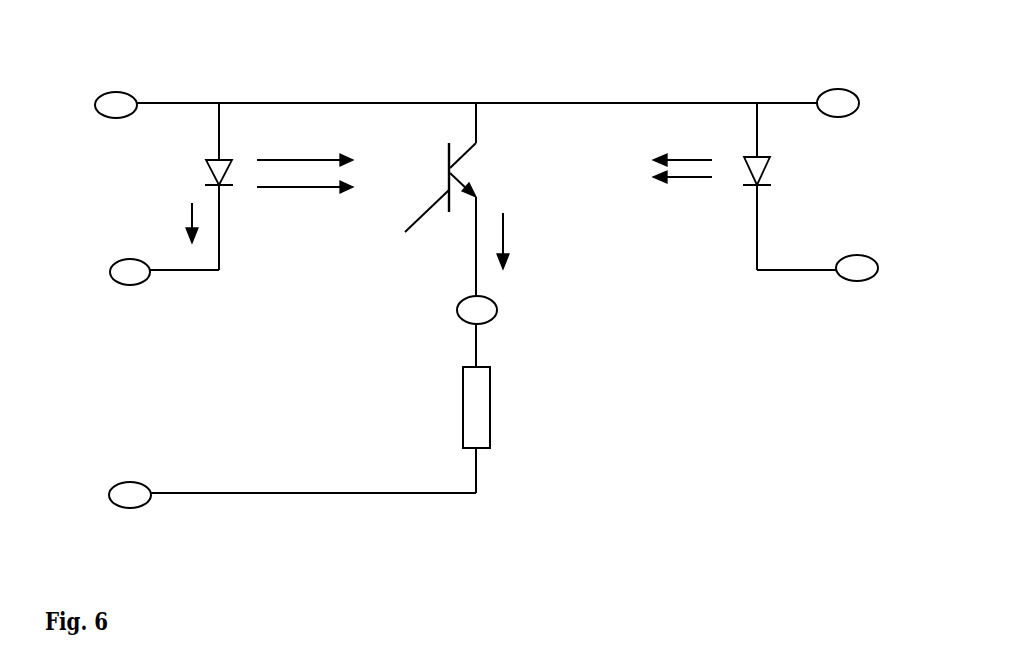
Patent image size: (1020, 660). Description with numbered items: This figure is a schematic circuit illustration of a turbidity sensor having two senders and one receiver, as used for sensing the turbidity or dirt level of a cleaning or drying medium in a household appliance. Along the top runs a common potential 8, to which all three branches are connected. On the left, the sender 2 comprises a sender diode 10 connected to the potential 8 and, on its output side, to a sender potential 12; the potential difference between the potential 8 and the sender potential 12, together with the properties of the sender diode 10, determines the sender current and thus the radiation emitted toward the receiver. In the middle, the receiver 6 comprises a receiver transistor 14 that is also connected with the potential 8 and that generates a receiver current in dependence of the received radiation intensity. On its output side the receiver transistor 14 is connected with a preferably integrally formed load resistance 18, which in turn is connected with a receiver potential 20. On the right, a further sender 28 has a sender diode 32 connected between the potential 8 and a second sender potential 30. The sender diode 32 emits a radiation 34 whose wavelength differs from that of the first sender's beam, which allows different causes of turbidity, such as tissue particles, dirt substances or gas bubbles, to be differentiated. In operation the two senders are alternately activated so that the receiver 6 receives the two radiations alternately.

The sender 2 is at (199, 225).
The receiver 6 is at (488, 199).
The potential 8 is at (119, 97).
The sender diode 10 is at (225, 195).
The sender potential 12 is at (127, 275).
The receiver transistor 14 is at (450, 199).
The load resistance 18 is at (477, 398).
The receiver potential 20 is at (132, 492).
The further sender 28 is at (768, 230).
The second sender potential 30 is at (863, 270).
The sender diode 32 is at (743, 195).
The radiation 34 is at (678, 198).